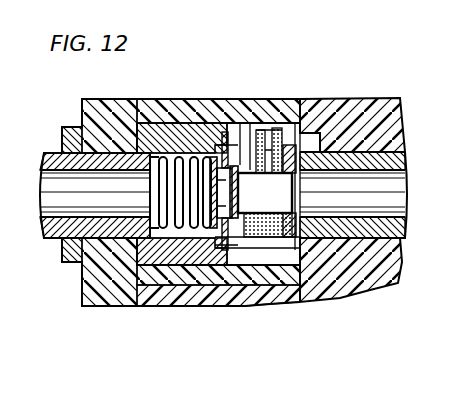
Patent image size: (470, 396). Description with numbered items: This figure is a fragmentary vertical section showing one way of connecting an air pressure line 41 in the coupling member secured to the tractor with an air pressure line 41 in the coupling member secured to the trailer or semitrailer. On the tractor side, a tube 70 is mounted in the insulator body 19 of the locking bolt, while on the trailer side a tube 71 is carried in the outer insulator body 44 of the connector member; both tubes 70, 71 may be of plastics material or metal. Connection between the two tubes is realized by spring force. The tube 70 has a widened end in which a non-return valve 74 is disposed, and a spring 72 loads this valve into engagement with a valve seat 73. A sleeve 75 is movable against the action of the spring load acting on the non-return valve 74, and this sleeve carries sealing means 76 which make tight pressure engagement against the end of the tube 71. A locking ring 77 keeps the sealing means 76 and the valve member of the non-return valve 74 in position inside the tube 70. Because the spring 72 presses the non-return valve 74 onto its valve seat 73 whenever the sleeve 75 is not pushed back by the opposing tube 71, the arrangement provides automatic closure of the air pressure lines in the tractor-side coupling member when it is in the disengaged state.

The insulator body 19 is at (147, 76).
The air pressure line 41 is at (62, 202).
The outer insulator body 44 is at (363, 106).
The tube 70 is at (60, 165).
The tube 71 is at (398, 166).
The spring 72 is at (175, 151).
The valve seat 73 is at (276, 132).
The non-return valve 74 is at (228, 147).
The sleeve 75 is at (256, 176).
The sealing means 76 is at (324, 283).
The locking ring 77 is at (284, 245).